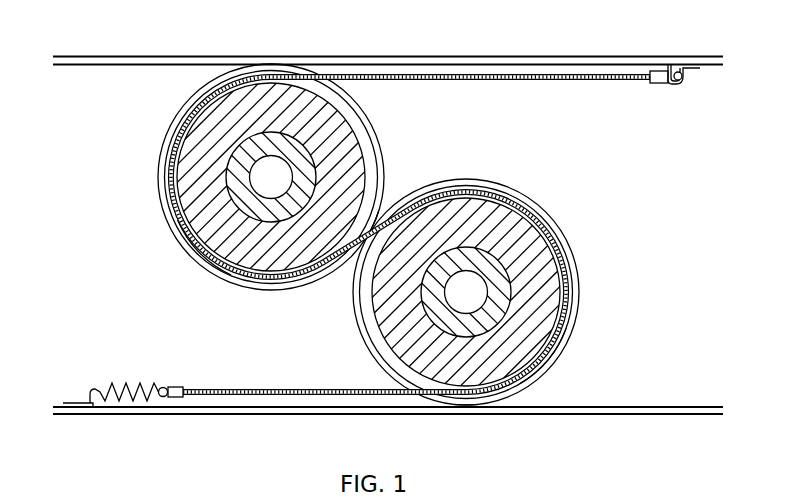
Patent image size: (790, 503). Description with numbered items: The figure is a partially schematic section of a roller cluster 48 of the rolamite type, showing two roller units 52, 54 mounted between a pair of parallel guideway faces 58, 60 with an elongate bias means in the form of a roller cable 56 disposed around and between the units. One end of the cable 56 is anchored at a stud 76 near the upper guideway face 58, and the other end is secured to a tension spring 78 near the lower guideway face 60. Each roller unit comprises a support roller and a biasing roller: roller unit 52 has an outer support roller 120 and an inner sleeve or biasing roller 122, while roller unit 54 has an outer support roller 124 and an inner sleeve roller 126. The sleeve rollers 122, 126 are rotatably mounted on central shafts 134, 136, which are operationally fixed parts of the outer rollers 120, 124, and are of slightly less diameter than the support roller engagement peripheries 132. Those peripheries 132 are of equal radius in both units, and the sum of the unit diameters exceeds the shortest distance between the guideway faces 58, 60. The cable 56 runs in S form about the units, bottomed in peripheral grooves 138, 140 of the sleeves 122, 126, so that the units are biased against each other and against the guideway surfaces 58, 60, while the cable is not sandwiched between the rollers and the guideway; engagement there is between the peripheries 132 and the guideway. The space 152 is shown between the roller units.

The roller cluster 48 is at (449, 143).
The roller unit 52 is at (263, 176).
The roller unit 54 is at (467, 291).
The roller cable 56 is at (573, 83).
The guideway face 58 is at (514, 56).
The guideway face 60 is at (682, 407).
The stud 76 is at (688, 82).
The tension spring 78 is at (128, 388).
The support roller 120 is at (166, 116).
The sleeve roller 122 is at (188, 155).
The support roller 124 is at (581, 234).
The sleeve roller 126 is at (544, 333).
The support roller engagement periphery 132 is at (272, 63).
The central shaft 134 is at (205, 260).
The central shaft 136 is at (487, 257).
The peripheral groove 138 is at (165, 197).
The peripheral groove 140 is at (538, 376).
The space between rollers 152 is at (209, 311).